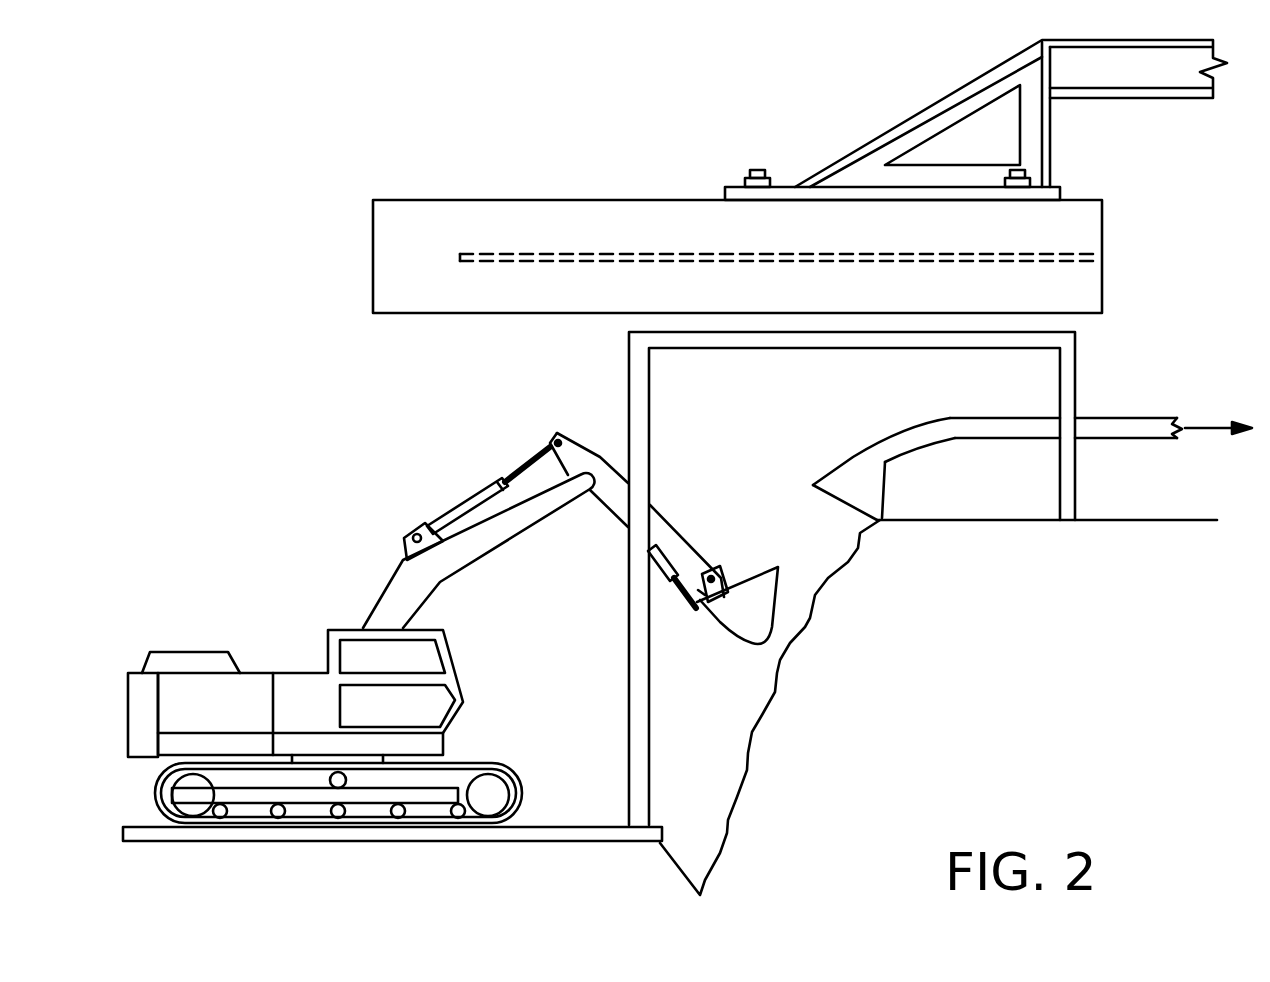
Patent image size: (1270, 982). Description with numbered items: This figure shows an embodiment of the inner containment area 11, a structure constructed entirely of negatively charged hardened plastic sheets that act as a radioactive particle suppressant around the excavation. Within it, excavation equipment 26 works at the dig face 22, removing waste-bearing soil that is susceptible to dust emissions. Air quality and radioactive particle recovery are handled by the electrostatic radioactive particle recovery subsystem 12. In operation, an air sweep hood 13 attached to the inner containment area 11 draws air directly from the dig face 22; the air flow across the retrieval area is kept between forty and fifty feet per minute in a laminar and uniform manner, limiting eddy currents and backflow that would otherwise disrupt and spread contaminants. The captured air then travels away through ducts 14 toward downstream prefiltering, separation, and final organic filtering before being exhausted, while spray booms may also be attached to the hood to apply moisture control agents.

The inner containment area 11 is at (628, 388).
The electrostatic radioactive particle recovery subsystem 12 is at (853, 455).
The air sweep hood 13 is at (555, 198).
The ducts 14 is at (1105, 417).
The dig face 22 is at (777, 692).
The excavation equipment 26 is at (467, 493).